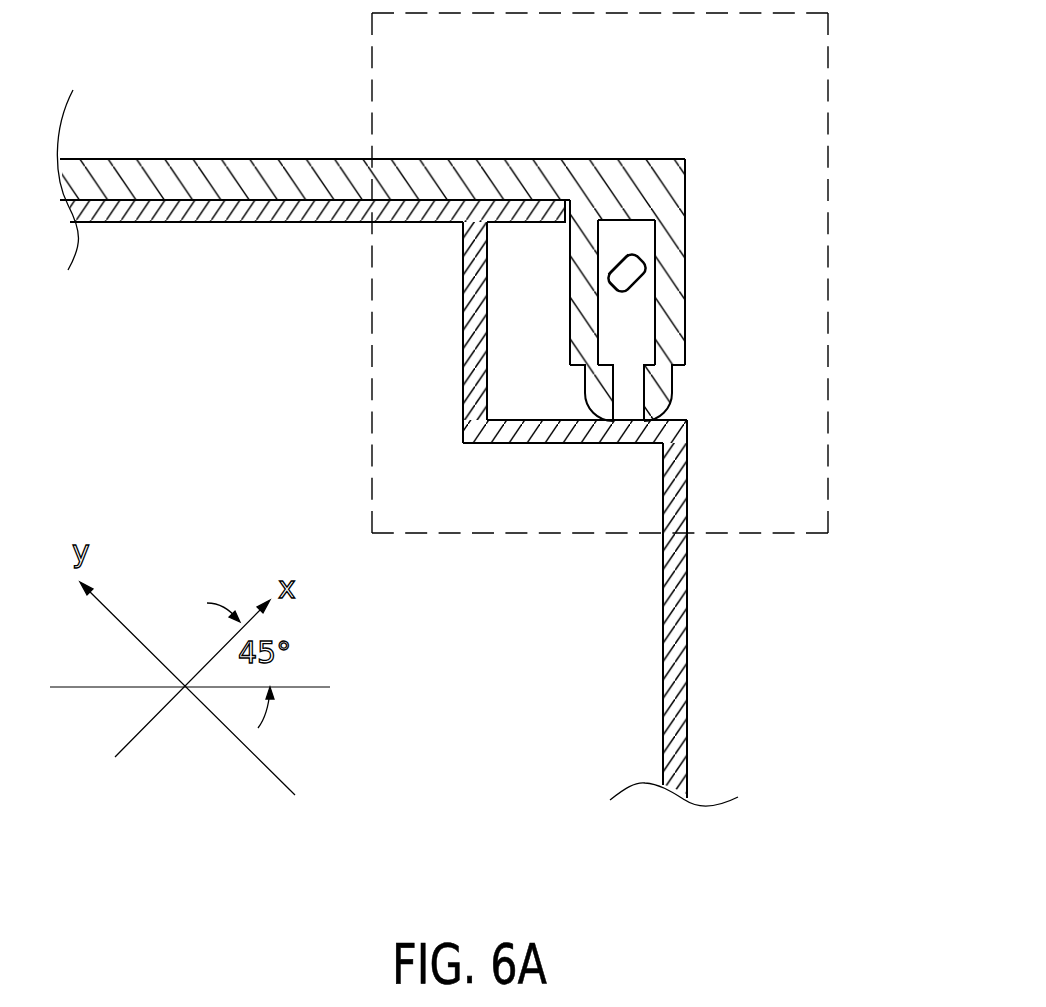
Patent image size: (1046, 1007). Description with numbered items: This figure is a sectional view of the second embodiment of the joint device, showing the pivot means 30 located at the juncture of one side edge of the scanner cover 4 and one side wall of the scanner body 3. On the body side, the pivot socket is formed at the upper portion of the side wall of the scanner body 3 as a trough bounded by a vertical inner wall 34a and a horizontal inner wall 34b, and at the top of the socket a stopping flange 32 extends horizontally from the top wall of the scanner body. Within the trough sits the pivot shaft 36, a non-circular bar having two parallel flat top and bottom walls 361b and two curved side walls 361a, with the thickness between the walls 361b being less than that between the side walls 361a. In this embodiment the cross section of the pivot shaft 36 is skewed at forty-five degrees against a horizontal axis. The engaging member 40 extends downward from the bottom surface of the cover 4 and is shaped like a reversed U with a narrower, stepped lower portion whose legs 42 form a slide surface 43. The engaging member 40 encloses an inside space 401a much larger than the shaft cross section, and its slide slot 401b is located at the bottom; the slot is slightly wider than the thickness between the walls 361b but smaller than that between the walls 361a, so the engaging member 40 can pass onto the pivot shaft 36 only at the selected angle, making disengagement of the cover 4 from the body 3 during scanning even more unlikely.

The scanner body 3 is at (620, 668).
The scanner cover 4 is at (240, 165).
The pivot means 30 is at (793, 100).
The stopping flange 32 is at (527, 212).
The vertical inner wall 34a is at (470, 370).
The horizontal inner wall 34b is at (540, 432).
The pivot shaft 36 is at (635, 270).
The engaging member 40 is at (626, 193).
The leg 42 is at (580, 302).
The slide surface 43 is at (598, 402).
The curved side walls 361a is at (643, 252).
The top and bottom walls 361b is at (613, 258).
The inside space 401a is at (640, 232).
The slide slot 401b is at (628, 400).